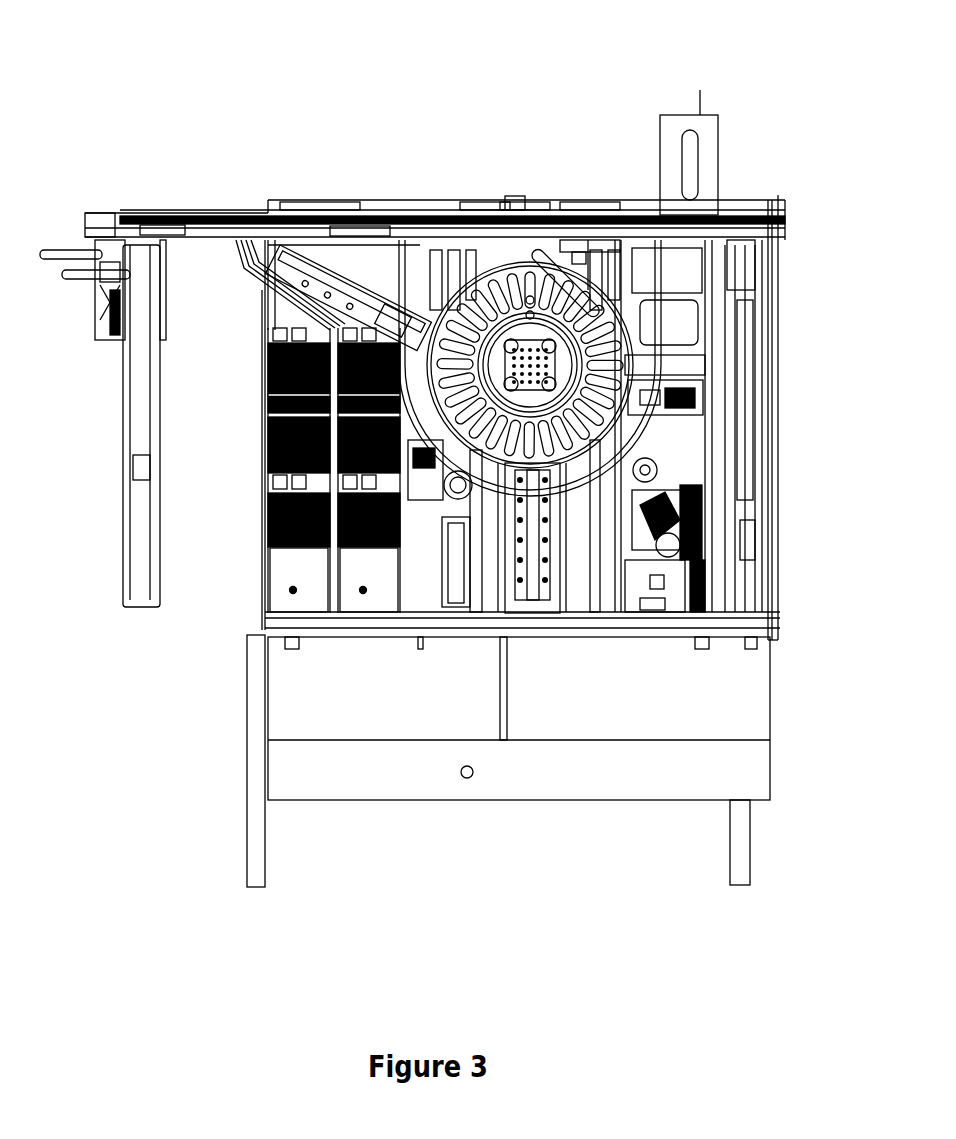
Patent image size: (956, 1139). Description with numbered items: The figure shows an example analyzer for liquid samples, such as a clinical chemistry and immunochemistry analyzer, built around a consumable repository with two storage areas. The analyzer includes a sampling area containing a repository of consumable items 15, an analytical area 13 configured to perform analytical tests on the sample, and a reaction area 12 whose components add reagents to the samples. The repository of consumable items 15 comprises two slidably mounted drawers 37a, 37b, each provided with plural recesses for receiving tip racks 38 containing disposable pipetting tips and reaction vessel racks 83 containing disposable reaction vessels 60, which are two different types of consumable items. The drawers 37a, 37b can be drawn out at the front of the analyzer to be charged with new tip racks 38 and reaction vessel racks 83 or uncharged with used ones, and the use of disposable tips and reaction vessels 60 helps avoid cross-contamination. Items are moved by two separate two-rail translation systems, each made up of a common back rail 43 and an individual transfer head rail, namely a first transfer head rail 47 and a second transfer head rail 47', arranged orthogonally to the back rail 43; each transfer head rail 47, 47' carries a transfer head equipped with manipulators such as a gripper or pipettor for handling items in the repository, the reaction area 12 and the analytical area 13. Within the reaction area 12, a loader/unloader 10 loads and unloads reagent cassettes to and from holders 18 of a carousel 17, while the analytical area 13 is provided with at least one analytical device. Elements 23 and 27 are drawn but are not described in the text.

The loader/unloader 10 is at (543, 600).
The reaction area 12 is at (525, 357).
The analytical area 13 is at (690, 352).
The repository of consumable items 15 is at (308, 318).
The carousel 17 is at (590, 235).
The holders 18 is at (482, 330).
The tilted feed arm 23 is at (346, 230).
The pivot arm 27 is at (527, 235).
The slidably mounted drawer 37a is at (283, 588).
The slidably mounted drawer 37b is at (356, 588).
The tip racks 38 is at (262, 468).
The common back rail 43 is at (180, 222).
The first transfer head rail 47 is at (103, 423).
The second transfer head rail 47' is at (785, 417).
The disposable reaction vessels 60 is at (265, 215).
The reaction vessel racks 83 is at (263, 387).